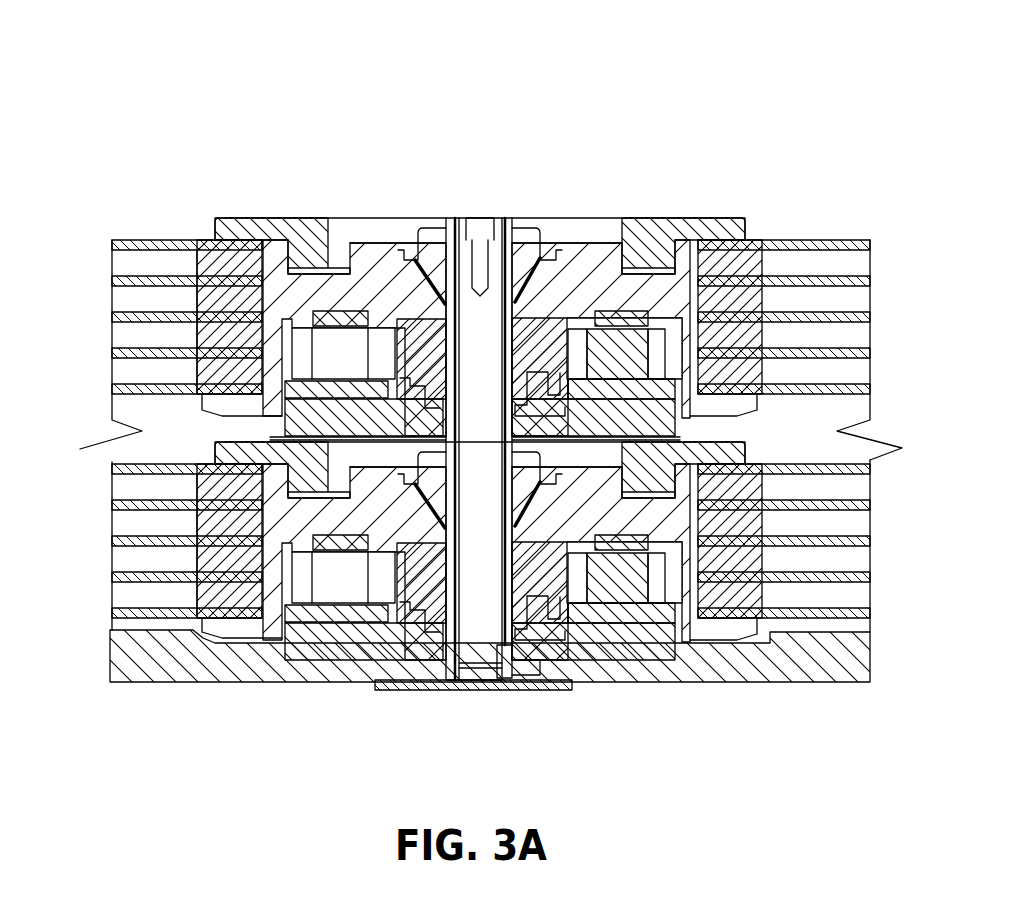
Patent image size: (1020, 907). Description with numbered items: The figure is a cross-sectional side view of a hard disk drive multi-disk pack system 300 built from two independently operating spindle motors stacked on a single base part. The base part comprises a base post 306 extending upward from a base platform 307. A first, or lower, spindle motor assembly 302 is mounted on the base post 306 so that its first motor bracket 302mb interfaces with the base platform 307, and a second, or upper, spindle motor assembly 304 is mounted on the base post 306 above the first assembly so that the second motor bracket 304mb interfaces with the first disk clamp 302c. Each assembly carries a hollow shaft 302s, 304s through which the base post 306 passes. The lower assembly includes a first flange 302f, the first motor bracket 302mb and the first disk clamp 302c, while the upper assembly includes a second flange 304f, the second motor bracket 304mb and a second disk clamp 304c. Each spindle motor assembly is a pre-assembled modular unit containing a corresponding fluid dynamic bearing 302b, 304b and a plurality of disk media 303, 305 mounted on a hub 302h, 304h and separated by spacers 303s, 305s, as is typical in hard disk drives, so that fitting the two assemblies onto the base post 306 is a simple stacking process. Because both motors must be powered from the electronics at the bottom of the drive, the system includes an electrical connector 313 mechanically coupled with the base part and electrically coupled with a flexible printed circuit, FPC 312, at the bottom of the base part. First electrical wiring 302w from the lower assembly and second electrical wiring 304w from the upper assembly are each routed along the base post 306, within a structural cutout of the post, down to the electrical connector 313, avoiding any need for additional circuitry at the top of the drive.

The multi-disk pack system 300 is at (172, 66).
The first spindle motor assembly 302 is at (900, 440).
The fluid dynamic bearing 302b is at (563, 653).
The first disk clamp 302c is at (737, 446).
The first flange 302f is at (790, 650).
The hub 302h is at (737, 660).
The first motor bracket 302mb is at (647, 643).
The hollow shaft 302s is at (435, 650).
The first electrical wiring 302w is at (583, 660).
The disk media 303 is at (103, 464).
The spacers 303s is at (238, 625).
The second spindle motor assembly 304 is at (877, 208).
The fluid dynamic bearing 304b is at (537, 243).
The second disk clamp 304c is at (288, 232).
The second flange 304f is at (745, 403).
The hub 304h is at (700, 240).
The second motor bracket 304mb is at (290, 428).
The hollow shaft 304s is at (432, 235).
The second electrical wiring 304w is at (540, 380).
The disk media 305 is at (103, 240).
The spacers 305s is at (222, 246).
The base post 306 is at (480, 682).
The base platform 307 is at (325, 672).
The FPC 312 is at (540, 673).
The electrical connector 313 is at (500, 670).